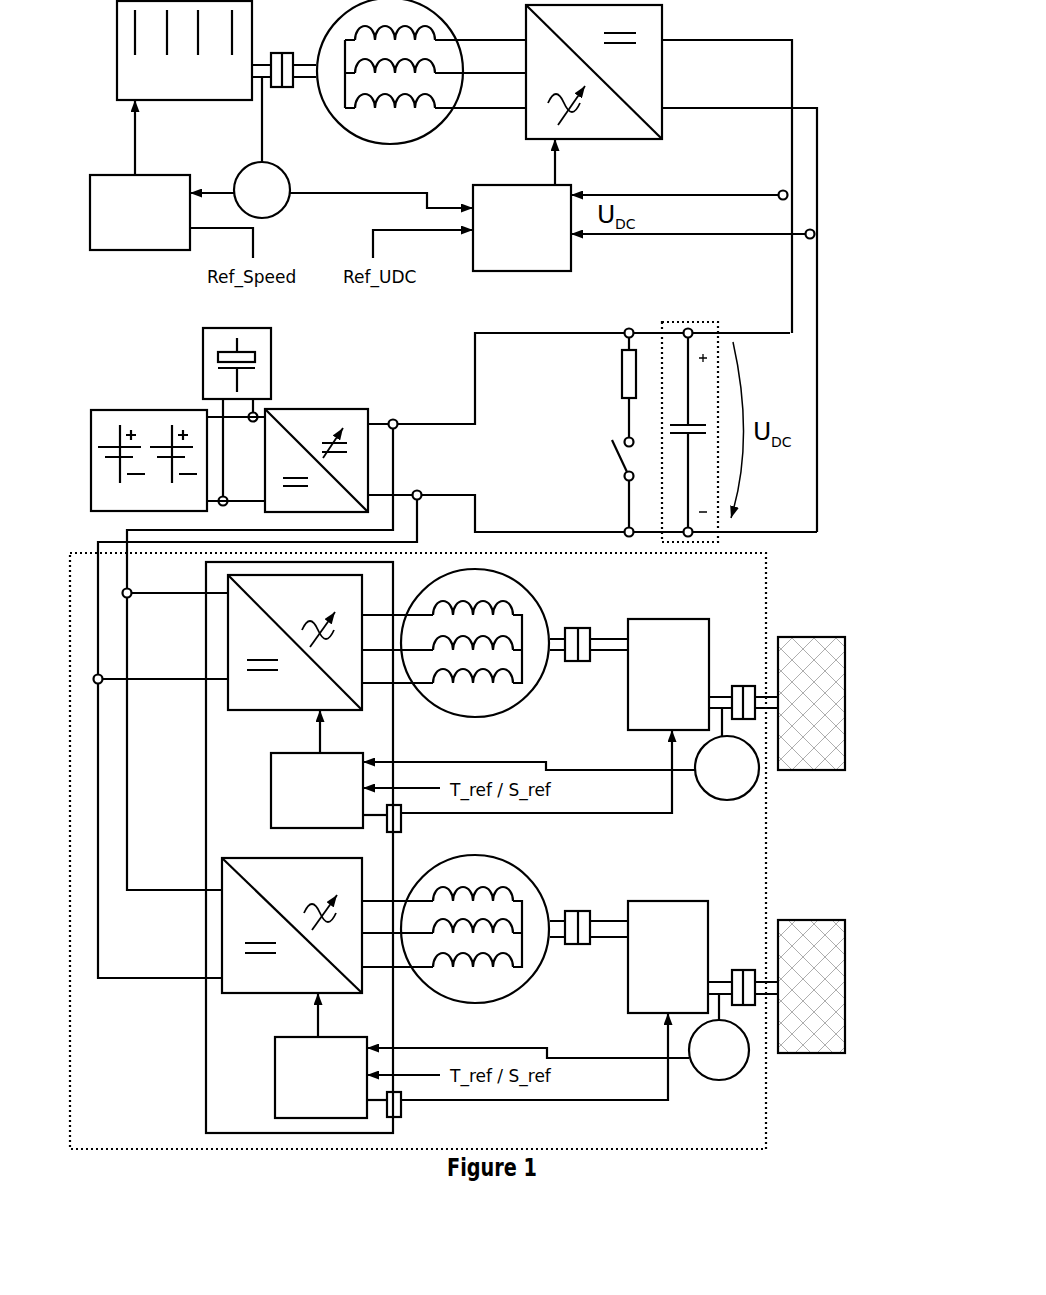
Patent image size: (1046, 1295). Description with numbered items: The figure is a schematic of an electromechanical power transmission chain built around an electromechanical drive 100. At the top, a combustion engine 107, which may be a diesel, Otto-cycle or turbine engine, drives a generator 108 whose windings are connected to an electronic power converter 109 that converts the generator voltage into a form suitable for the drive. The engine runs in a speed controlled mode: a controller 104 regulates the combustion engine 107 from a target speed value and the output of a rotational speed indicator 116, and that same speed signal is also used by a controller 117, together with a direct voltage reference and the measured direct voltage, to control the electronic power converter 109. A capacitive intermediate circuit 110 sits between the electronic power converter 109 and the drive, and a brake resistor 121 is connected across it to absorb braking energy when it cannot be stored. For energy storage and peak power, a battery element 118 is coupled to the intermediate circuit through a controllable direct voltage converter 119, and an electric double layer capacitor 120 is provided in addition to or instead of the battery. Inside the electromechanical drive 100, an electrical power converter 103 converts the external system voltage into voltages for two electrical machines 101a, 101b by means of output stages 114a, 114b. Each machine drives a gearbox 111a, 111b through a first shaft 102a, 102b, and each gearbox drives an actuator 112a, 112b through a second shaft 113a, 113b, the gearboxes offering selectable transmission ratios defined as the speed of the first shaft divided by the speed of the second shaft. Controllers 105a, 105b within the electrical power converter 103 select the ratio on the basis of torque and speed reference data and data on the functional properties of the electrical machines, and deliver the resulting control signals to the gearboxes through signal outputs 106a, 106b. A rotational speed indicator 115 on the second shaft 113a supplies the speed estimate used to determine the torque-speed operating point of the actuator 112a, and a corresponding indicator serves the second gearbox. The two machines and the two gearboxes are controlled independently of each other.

The electromechanical drive 100 is at (768, 600).
The electrical machine 101a is at (470, 717).
The electrical machine 101b is at (470, 1003).
The first shaft 102a is at (615, 637).
The first shaft 102b is at (615, 920).
The electrical power converter 103 is at (206, 808).
The controller 104 is at (140, 212).
The controller 105a is at (317, 790).
The controller 105b is at (321, 1077).
The signal output 106a is at (403, 818).
The signal output 106b is at (403, 1105).
The combustion engine 107 is at (184, 50).
The generator 108 is at (395, 143).
The electronic power converter 109 is at (595, 139).
The capacitive intermediate circuit 110 is at (688, 322).
The gearbox 111a is at (668, 674).
The gearbox 111b is at (668, 957).
The actuator 112a is at (811, 703).
The actuator 112b is at (811, 986).
The second shaft 113a is at (721, 690).
The second shaft 113b is at (719, 975).
The output stage 114a is at (295, 642).
The output stage 114b is at (292, 925).
The rotational speed indicator 115 is at (727, 754).
The rotational speed indicator 116 is at (262, 190).
The controller 117 is at (522, 228).
The battery element 118 is at (125, 410).
The controllable direct voltage converter 119 is at (305, 409).
The electric double layer capacitor 120 is at (275, 365).
The brake resistor 121 is at (622, 380).